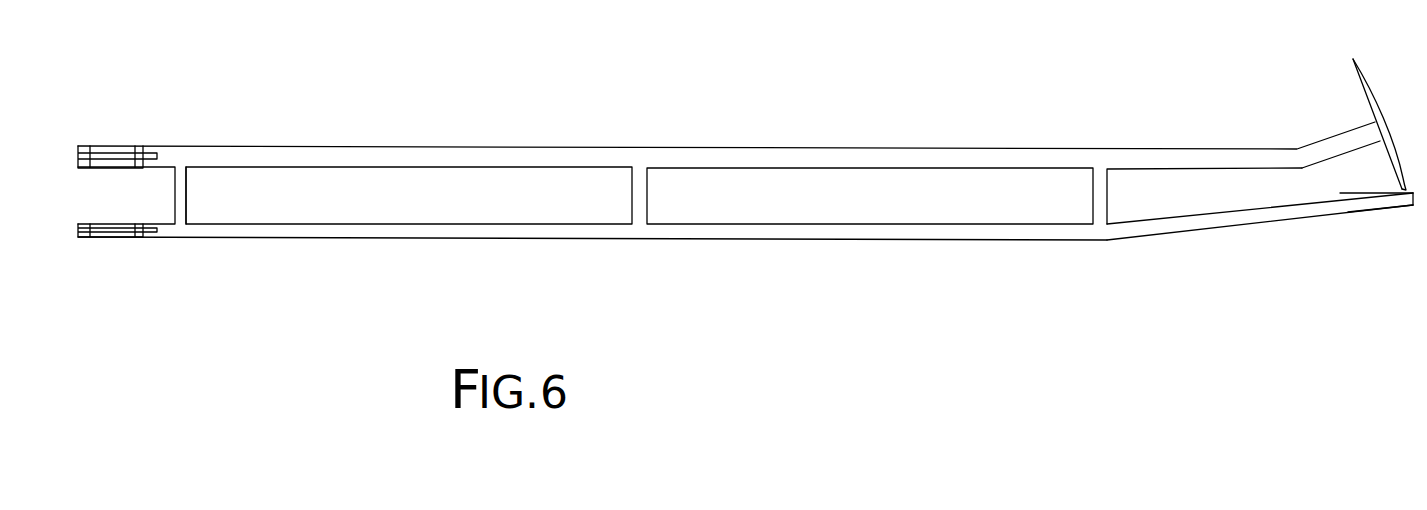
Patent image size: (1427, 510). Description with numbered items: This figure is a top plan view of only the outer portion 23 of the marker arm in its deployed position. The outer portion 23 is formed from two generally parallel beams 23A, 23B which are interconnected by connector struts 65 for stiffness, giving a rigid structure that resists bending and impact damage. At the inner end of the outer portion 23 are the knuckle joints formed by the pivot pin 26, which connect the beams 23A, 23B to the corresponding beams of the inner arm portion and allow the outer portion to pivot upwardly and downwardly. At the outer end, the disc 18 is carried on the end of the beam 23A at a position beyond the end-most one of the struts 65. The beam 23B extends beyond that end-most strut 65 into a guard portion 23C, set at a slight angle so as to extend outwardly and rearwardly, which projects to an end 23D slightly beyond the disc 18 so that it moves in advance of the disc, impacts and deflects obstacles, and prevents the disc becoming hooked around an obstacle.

The disc 18 is at (1356, 73).
The outer portion 23 is at (746, 176).
The beam 23A is at (600, 147).
The beam 23B is at (585, 239).
The guard portion 23C is at (1202, 224).
The end of guard portion 23D is at (1414, 208).
The pivot pin 26 is at (123, 239).
The connector struts 65 is at (185, 195).